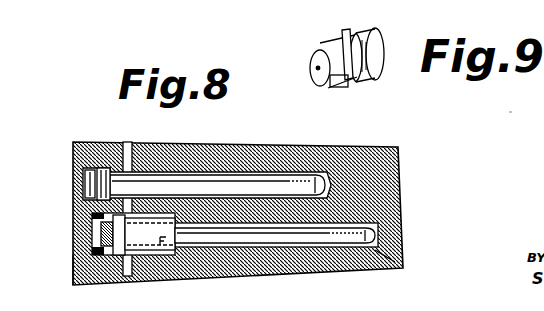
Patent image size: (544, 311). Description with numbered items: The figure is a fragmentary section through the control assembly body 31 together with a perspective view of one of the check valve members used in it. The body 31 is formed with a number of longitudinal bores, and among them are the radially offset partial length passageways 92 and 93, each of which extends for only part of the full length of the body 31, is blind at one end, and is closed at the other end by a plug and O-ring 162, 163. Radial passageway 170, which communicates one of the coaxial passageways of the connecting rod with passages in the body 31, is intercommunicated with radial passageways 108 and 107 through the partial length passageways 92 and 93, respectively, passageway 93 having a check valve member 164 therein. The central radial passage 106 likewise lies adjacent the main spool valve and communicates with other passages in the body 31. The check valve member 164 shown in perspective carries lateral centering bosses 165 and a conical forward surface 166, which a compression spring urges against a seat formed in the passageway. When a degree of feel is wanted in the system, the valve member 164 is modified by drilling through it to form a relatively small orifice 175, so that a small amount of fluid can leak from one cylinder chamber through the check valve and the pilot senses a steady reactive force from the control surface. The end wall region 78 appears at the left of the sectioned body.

In FIG. 8, the control assembly body 31 is at (395, 185).
In FIG. 8, the end wall 78 is at (73, 277).
In FIG. 8, the partial length passageway 92 is at (225, 182).
In FIG. 8, the partial length passageway 93 is at (250, 240).
In FIG. 9, the central radial passage 106 is at (522, 105).
In FIG. 8, the radial passageway 107 is at (390, 258).
In FIG. 8, the radial passageway 108 is at (327, 177).
In FIG. 8, the plug 162 is at (73, 187).
In FIG. 8, the O-ring 163 is at (85, 170).
In FIG. 8, the valve member 164 is at (143, 240).
In FIG. 9, the valve member 164 is at (320, 48).
In FIG. 9, the lateral centering bosses 165 is at (350, 50).
In FIG. 9, the conical forward surface 166 is at (332, 86).
In FIG. 8, the radial passageway 170 is at (132, 143).
In FIG. 9, the orifice 175 is at (312, 68).